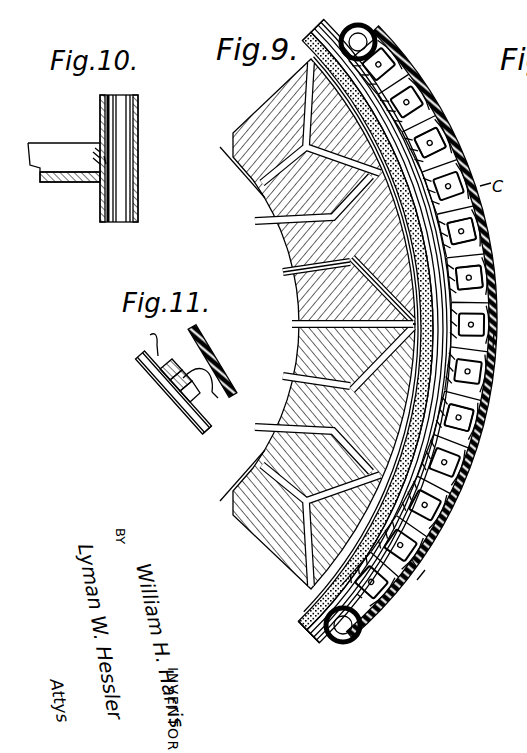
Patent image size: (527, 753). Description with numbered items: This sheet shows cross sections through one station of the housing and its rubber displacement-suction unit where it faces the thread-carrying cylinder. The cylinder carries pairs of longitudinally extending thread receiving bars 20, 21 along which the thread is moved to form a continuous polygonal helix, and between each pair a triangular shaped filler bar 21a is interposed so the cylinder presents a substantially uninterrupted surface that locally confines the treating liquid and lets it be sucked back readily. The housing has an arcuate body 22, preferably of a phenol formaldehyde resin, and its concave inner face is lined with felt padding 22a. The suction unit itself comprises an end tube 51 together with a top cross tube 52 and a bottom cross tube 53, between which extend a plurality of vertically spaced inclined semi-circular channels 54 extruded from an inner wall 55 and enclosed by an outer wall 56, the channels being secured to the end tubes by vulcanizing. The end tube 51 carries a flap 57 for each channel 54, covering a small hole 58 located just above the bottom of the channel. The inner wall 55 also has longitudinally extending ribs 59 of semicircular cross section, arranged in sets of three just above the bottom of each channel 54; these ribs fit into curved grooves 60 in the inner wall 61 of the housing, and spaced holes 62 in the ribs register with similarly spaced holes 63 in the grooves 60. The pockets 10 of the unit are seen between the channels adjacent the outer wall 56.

In FIG. 9, the pocket cell 10 is at (446, 249).
In FIG. 9, the thread receiving bar 20 is at (275, 203).
In FIG. 9, the thread receiving bar 21 is at (287, 243).
In FIG. 9, the triangular shaped filler bar 21a is at (317, 117).
In FIG. 9, the arcuate body 22 is at (335, 14).
In FIG. 11, the arcuate body 22 is at (185, 423).
In FIG. 9, the padding 22a is at (297, 611).
In FIG. 10, the end tube 51 is at (138, 152).
In FIG. 9, the top cross tube 52 is at (378, 38).
In FIG. 9, the bottom cross tube 53 is at (344, 641).
In FIG. 9, the inclined semi-circular channel 54 is at (413, 100).
In FIG. 10, the inclined semi-circular channel 54 is at (50, 180).
In FIG. 11, the inclined semi-circular channel 54 is at (210, 394).
In FIG. 9, the inner wall 55 is at (436, 197).
In FIG. 11, the inner wall 55 is at (151, 336).
In FIG. 9, the outer wall 56 is at (488, 240).
In FIG. 11, the outer wall 56 is at (201, 333).
In FIG. 9, the flap 57 is at (485, 362).
In FIG. 10, the flap 57 is at (97, 155).
In FIG. 9, the small hole 58 is at (495, 339).
In FIG. 10, the small hole 58 is at (105, 160).
In FIG. 9, the longitudinally extending rib 59 is at (313, 80).
In FIG. 11, the longitudinally extending rib 59 is at (163, 377).
In FIG. 9, the curved groove 60 is at (357, 594).
In FIG. 11, the curved groove 60 is at (187, 403).
In FIG. 9, the inner wall of the housing 61 is at (310, 640).
In FIG. 11, the inner wall of the housing 61 is at (198, 438).
In FIG. 9, the hole 62 is at (440, 164).
In FIG. 11, the hole 62 is at (183, 378).
In FIG. 9, the hole 63 is at (300, 367).
In FIG. 11, the hole 63 is at (173, 390).